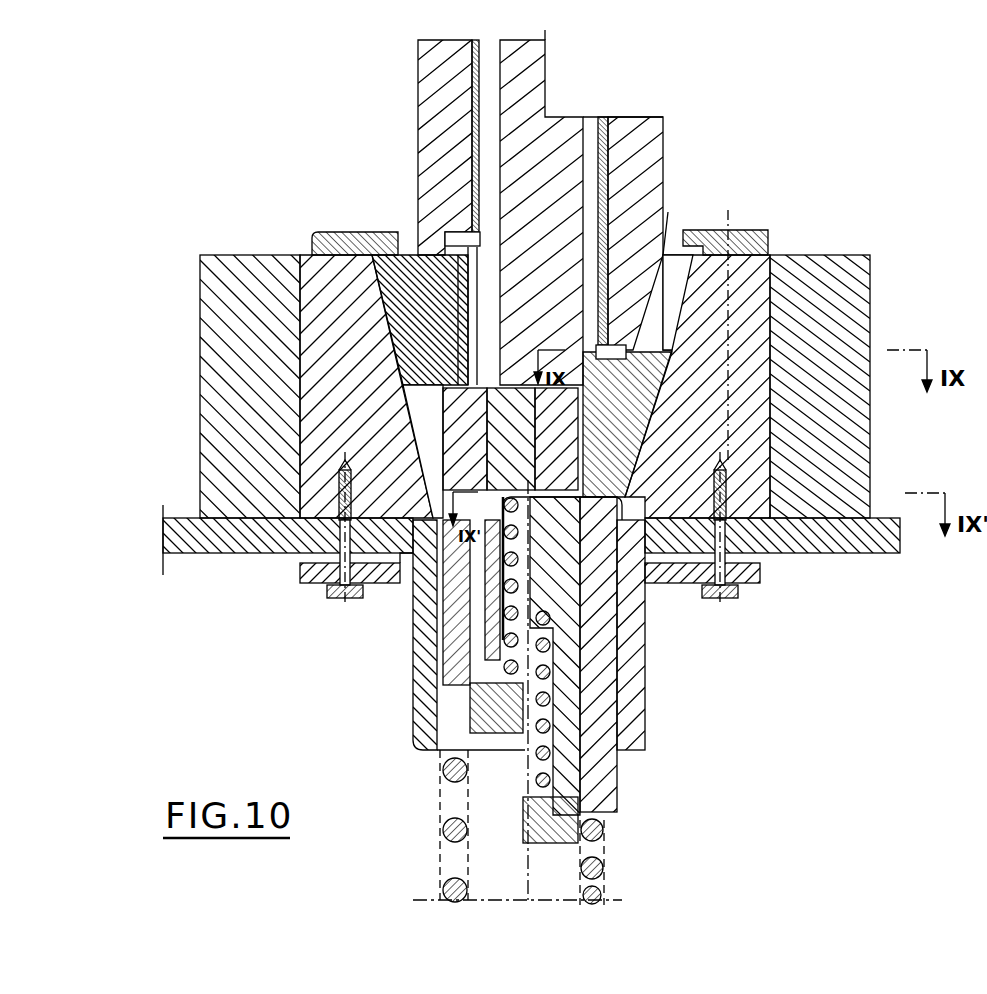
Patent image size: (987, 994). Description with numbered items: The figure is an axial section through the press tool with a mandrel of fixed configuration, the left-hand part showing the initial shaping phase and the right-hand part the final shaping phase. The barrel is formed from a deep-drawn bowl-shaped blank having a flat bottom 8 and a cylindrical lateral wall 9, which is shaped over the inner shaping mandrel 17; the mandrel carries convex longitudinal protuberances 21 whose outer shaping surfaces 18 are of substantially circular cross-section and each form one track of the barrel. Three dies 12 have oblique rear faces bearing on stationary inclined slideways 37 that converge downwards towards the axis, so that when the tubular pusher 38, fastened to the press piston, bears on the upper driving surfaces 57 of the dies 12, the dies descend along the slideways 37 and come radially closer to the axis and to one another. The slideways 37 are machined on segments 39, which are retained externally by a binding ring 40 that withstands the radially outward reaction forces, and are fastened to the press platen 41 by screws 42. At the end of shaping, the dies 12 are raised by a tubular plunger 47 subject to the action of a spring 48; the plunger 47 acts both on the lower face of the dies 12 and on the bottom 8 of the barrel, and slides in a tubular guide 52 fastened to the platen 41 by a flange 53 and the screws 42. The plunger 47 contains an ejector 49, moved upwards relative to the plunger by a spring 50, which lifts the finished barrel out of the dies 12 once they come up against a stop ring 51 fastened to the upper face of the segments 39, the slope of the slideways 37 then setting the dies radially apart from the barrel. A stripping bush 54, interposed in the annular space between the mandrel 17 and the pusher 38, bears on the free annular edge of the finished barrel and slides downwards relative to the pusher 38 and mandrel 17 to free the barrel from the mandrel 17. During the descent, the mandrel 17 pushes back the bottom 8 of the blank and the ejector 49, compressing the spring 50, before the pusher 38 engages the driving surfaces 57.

The flat bottom 8 is at (513, 340).
The cylindrical lateral wall 9 is at (478, 210).
The die 12 is at (352, 230).
The inner shaping mandrel 17 is at (545, 52).
The shaping surface 18 is at (450, 345).
The convex longitudinal protuberance 21 is at (663, 220).
The inclined slideway 37 is at (420, 440).
The tubular pusher 38 is at (418, 92).
The segment 39 is at (325, 317).
The binding ring 40 is at (220, 255).
The platen 41 is at (215, 553).
The screw 42 is at (330, 595).
The tubular plunger 47 is at (415, 700).
The spring 48 is at (440, 770).
The ejector 49 is at (415, 633).
The spring 50 is at (415, 668).
The stop ring 51 is at (335, 232).
The tubular guide 52 is at (417, 707).
The flange 53 is at (387, 583).
The stripping bush 54 is at (418, 62).
The upper driving surface 57 is at (455, 240).